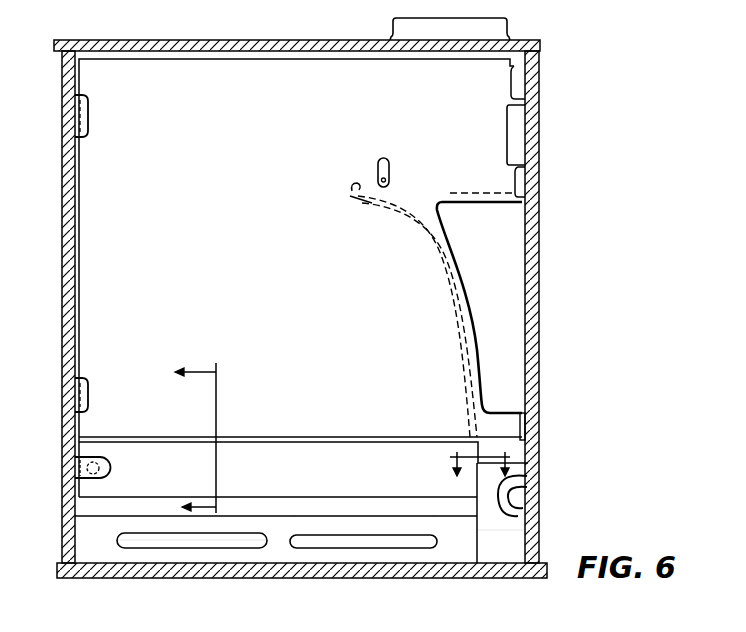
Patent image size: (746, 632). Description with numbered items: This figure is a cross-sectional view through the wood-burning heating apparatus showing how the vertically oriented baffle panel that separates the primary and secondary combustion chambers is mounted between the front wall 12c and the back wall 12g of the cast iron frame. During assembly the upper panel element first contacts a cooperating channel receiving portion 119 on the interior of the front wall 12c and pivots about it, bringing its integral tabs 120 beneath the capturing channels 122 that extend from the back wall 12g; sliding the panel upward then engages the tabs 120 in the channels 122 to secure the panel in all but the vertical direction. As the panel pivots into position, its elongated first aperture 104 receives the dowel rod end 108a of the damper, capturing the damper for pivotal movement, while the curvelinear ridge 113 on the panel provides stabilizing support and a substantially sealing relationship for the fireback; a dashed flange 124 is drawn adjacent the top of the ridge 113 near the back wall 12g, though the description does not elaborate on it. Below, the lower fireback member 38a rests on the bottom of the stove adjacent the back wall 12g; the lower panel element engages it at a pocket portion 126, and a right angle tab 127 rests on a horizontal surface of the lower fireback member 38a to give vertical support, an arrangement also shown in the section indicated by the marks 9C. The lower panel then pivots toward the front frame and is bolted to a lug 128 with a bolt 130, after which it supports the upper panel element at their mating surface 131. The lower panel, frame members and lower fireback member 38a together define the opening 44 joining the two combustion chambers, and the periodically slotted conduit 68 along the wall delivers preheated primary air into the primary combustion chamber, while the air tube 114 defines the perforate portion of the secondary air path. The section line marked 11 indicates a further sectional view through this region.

The front wall 12c is at (62, 372).
The back wall 12g is at (540, 290).
The channel receiving portion 119 is at (88, 128).
The capturing channels 122 is at (522, 89).
The tabs 120 is at (512, 170).
The first aperture 104 is at (382, 160).
The dowel rod end 108a is at (337, 196).
The curvelinear ridge 113 is at (453, 302).
The flange 124 is at (502, 205).
The section line 11- 11 is at (186, 441).
The bolt 130 is at (101, 455).
The mating surface 131 is at (288, 438).
The lug 128 is at (112, 470).
The slotted conduit 68 is at (293, 518).
The opening 44 is at (388, 505).
The right angle tab 127 is at (478, 452).
The section line 9C- 9C is at (471, 470).
The pocket portion 126 is at (514, 447).
The air tube 114 is at (520, 478).
The lower fireback member 38a is at (513, 543).